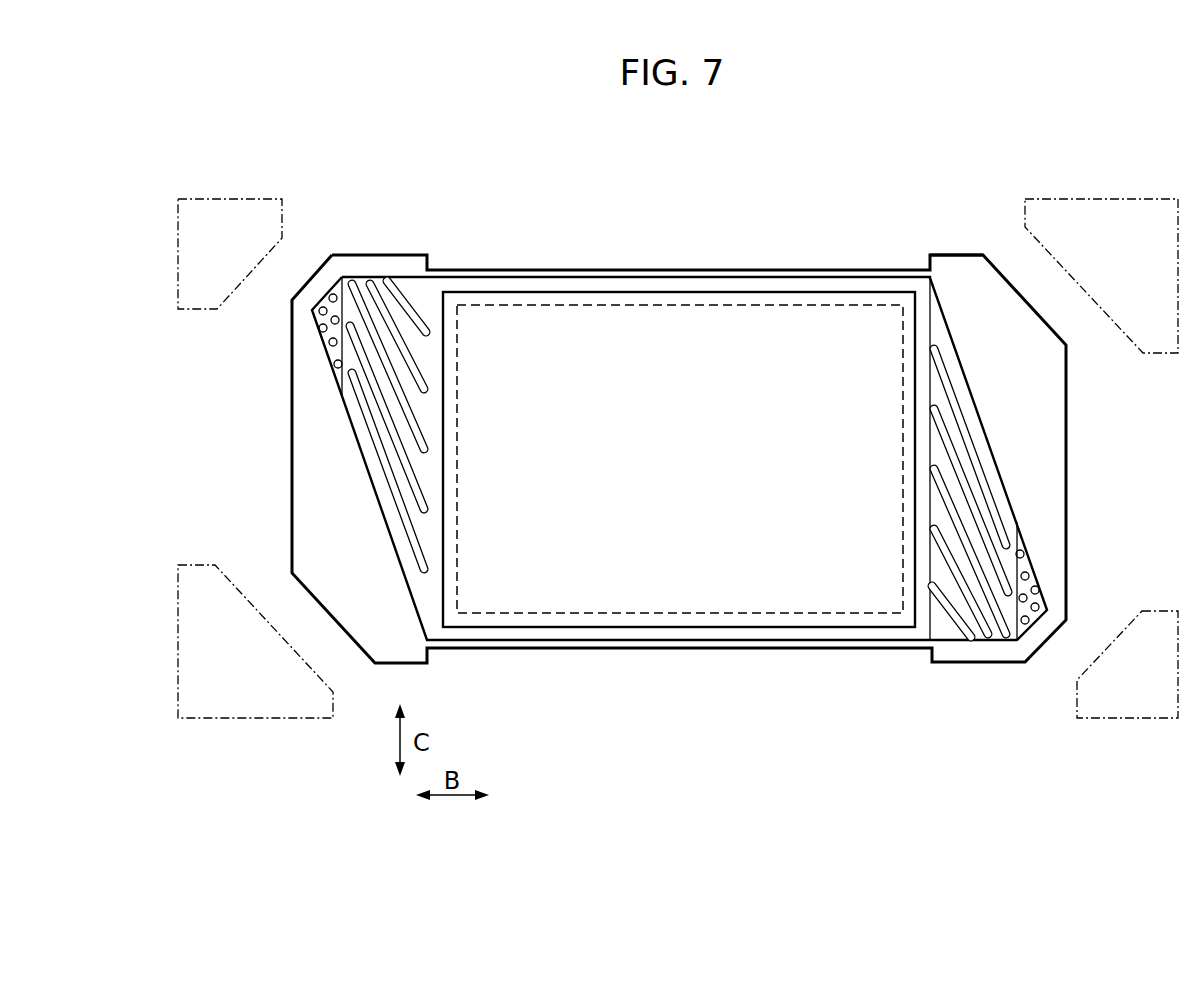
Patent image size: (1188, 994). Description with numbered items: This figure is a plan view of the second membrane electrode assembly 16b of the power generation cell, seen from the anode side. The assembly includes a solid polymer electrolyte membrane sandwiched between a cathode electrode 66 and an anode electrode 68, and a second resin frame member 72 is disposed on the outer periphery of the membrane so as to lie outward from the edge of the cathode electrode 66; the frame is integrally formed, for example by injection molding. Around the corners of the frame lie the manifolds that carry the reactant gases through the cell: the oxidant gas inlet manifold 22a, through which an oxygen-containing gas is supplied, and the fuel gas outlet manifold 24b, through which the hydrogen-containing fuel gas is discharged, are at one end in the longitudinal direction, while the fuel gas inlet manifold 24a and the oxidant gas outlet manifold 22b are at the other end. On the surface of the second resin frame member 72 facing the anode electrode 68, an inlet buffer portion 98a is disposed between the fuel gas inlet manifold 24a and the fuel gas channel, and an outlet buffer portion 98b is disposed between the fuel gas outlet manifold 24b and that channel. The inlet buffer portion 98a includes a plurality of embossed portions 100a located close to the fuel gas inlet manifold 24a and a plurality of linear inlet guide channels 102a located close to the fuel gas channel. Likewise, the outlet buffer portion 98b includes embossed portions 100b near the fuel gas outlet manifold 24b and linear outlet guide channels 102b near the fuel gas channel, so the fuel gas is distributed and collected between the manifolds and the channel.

The second membrane electrode assembly 16b is at (450, 161).
The inlet buffer portion 98a is at (373, 268).
The outlet buffer portion 98b is at (987, 655).
The second resin frame member 72 is at (947, 247).
The anode electrode 68 is at (541, 328).
The cathode electrode 66 is at (594, 355).
The embossed portions 100a is at (327, 345).
The embossed portions 100b is at (1031, 575).
The linear inlet guide channels 102a is at (402, 422).
The linear outlet guide channels 102b is at (957, 493).
The fuel gas inlet manifold 24a is at (219, 222).
The fuel gas outlet manifold 24b is at (1120, 697).
The oxidant gas inlet manifold 22a is at (1097, 218).
The oxidant gas outlet manifold 22b is at (233, 697).